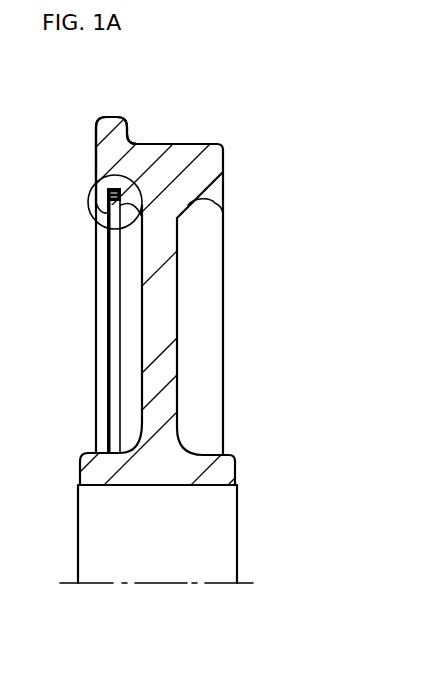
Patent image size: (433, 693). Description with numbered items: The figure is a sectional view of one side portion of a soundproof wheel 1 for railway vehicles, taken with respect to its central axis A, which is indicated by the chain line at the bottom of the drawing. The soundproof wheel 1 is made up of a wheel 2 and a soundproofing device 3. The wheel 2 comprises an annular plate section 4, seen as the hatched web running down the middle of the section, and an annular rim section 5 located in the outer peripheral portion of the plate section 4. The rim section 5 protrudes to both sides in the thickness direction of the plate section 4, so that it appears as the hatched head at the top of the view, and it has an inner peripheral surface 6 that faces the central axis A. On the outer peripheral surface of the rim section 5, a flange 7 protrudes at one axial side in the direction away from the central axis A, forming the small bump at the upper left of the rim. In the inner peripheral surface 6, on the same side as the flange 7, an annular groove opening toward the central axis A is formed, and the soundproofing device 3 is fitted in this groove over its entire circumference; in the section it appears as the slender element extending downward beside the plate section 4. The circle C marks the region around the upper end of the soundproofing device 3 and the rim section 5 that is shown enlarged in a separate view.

The soundproof wheel 1 is at (244, 123).
The wheel 2 is at (177, 236).
The soundproofing device 3 is at (108, 300).
The plate section 4 is at (175, 330).
The rim section 5 is at (95, 167).
The inner peripheral surface 6 is at (95, 213).
The flange 7 is at (113, 116).
The circle C is at (90, 192).
The central axis A is at (215, 586).